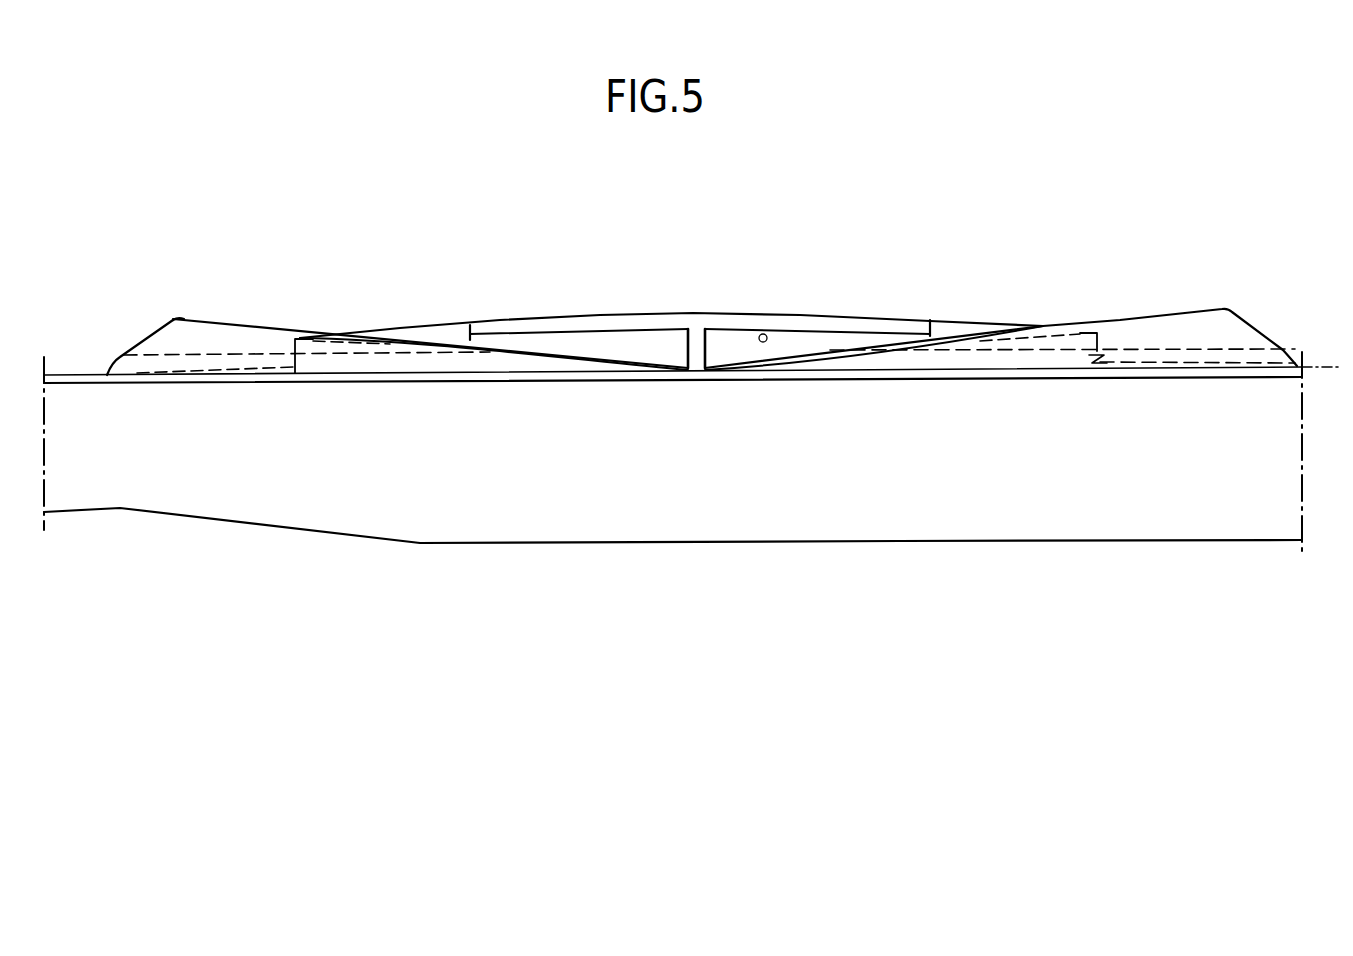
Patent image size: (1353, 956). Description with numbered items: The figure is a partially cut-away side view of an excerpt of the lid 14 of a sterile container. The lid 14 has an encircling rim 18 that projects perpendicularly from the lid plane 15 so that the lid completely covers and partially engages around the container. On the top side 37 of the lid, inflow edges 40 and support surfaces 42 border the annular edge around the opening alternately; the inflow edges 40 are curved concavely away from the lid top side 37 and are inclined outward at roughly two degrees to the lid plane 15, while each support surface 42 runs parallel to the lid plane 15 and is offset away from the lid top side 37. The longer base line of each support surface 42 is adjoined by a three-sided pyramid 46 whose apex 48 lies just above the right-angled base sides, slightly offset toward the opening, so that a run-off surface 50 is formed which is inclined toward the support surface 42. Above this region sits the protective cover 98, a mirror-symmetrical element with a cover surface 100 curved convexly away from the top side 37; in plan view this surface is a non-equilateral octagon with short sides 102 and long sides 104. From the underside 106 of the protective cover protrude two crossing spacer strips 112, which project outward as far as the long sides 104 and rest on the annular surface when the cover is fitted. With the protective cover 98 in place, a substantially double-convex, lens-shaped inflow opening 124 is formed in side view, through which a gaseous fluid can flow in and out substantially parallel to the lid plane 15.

The lid 14 is at (918, 548).
The encircling rim 18 is at (1003, 542).
The lid plane 15 is at (1318, 367).
The top side of the lid 37 is at (1193, 295).
The inflow edge 40 is at (1152, 365).
The support surface 42 is at (198, 357).
The three-sided pyramid 46 is at (181, 300).
The apex of the pyramid 48 is at (170, 318).
The run-off surface 50 is at (250, 325).
The protective cover 98 is at (830, 303).
The cover surface 100 is at (902, 320).
The short sides 102 is at (973, 327).
The long sides 104 is at (720, 322).
The underside of the protective cover 106 is at (766, 336).
The spacer strip 112 is at (686, 355).
The inflow opening 124 is at (327, 350).